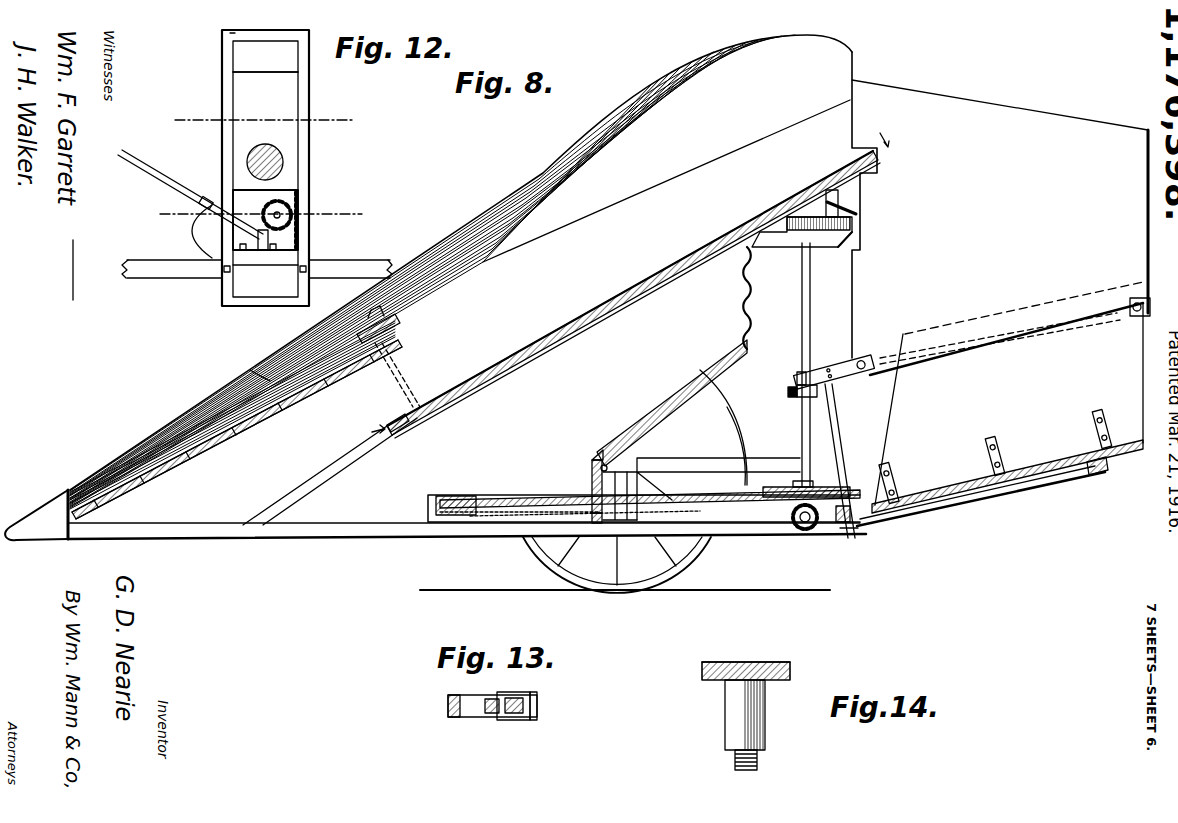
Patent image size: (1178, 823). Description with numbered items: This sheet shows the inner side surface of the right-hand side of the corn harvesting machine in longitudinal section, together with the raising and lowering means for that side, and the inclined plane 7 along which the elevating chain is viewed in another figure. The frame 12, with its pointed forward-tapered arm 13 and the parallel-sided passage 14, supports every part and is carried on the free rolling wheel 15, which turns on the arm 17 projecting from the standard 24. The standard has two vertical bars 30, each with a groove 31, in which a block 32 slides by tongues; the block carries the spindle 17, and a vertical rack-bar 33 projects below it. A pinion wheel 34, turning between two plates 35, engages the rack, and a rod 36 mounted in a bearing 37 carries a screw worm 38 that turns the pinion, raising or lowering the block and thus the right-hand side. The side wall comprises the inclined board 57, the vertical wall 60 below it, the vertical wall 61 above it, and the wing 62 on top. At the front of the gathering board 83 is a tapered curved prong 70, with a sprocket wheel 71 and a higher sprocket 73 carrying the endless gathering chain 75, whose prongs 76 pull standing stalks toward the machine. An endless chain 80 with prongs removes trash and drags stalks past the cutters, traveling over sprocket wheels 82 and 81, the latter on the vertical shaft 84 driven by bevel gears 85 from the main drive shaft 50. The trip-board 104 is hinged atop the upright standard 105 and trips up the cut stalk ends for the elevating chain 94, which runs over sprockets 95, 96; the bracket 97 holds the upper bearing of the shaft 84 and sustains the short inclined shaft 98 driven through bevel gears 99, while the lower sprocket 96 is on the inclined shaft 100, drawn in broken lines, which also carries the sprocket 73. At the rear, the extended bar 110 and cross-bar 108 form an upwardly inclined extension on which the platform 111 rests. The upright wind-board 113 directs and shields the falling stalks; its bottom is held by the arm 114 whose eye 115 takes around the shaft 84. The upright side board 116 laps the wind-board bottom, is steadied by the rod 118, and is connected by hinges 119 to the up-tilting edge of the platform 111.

In FIG. 8, the inclined plane section line 7 is at (630, 289).
In FIG. 8, the frame 12 is at (868, 526).
In FIG. 12, the frame 12 is at (144, 260).
In FIG. 12, the forward-tapered arm 13 is at (254, 214).
In FIG. 12, the parallel-sided passage 14 is at (258, 120).
In FIG. 8, the free rolling wheel 15 is at (524, 556).
In FIG. 12, the arm or spindle 17 is at (285, 161).
In FIG. 14, the arm or spindle 17 is at (727, 712).
In FIG. 12, the standard 24 is at (232, 36).
In FIG. 12, the vertical bar 30 is at (305, 92).
In FIG. 13, the vertical bar 30 is at (450, 712).
In FIG. 14, the vertical bar 30 is at (702, 672).
In FIG. 13, the groove 31 is at (448, 699).
In FIG. 12, the block 32 is at (265, 89).
In FIG. 14, the block 32 is at (748, 662).
In FIG. 12, the vertical rack-bar 33 is at (299, 241).
In FIG. 12, the pinion wheel 34 is at (290, 210).
In FIG. 13, the pinion wheel 34 is at (492, 715).
In FIG. 13, the plate 35 is at (516, 720).
In FIG. 12, the rod 36 is at (190, 189).
In FIG. 12, the bearing 37 is at (208, 200).
In FIG. 12, the screw worm 38 is at (262, 250).
In FIG. 8, the main drive shaft 50 is at (842, 524).
In FIG. 8, the inclined board 57 is at (636, 300).
In FIG. 8, the vertical wall 60 is at (623, 345).
In FIG. 8, the vertical wall 61 is at (680, 205).
In FIG. 8, the wing 62 is at (656, 98).
In FIG. 8, the tapered curved prong 70 is at (46, 513).
In FIG. 8, the sprocket wheel 71 is at (106, 480).
In FIG. 8, the sprocket 73 is at (357, 327).
In FIG. 8, the endless gathering chain 75 is at (270, 380).
In FIG. 8, the prong 76 is at (182, 422).
In FIG. 8, the endless chain 80 is at (530, 500).
In FIG. 8, the sprocket wheel 81 is at (788, 486).
In FIG. 8, the sprocket wheel 82 is at (456, 500).
In FIG. 8, the gathering board 83 is at (224, 392).
In FIG. 8, the vertical shaft 84 is at (803, 436).
In FIG. 8, the bevel gears 85 is at (805, 530).
In FIG. 8, the elevating chain 94 is at (672, 280).
In FIG. 8, the sprocket 95 is at (856, 200).
In FIG. 8, the sprocket 96 is at (424, 420).
In FIG. 8, the bracket 97 is at (778, 247).
In FIG. 8, the short inclined shaft 98 is at (840, 200).
In FIG. 8, the bevel gears 99 is at (853, 235).
In FIG. 8, the inclined shaft 100 is at (406, 378).
In FIG. 8, the trip-board 104 is at (700, 415).
In FIG. 8, the upright standard 105 is at (592, 472).
In FIG. 8, the cross-bar 108 is at (1100, 475).
In FIG. 8, the extended bar 110 is at (965, 508).
In FIG. 8, the platform 111 is at (1036, 462).
In FIG. 8, the wind-board 113 is at (1032, 116).
In FIG. 8, the arm 114 is at (842, 368).
In FIG. 8, the eye 115 is at (798, 380).
In FIG. 8, the upright side board 116 is at (1006, 404).
In FIG. 8, the rod 118 is at (970, 348).
In FIG. 8, the hinges 119 is at (900, 472).